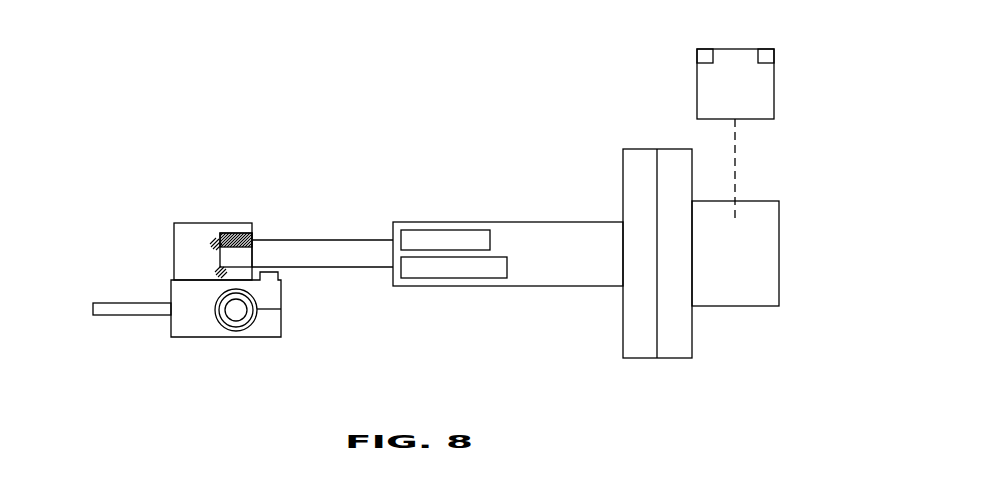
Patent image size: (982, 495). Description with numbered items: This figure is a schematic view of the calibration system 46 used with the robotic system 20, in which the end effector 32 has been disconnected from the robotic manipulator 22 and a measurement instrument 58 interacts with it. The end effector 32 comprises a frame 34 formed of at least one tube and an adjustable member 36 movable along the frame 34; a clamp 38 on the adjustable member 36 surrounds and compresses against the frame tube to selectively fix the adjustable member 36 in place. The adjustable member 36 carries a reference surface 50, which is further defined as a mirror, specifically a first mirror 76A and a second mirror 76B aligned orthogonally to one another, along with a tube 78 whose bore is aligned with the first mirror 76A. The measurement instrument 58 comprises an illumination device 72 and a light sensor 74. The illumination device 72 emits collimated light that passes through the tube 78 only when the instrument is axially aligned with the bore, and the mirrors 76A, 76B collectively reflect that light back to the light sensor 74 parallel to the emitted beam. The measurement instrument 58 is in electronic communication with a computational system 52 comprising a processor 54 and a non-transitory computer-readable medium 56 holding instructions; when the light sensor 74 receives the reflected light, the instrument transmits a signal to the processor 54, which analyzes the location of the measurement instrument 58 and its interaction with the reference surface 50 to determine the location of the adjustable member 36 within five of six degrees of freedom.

The robotic system 20 is at (806, 78).
The robotic manipulator 22 is at (738, 298).
The end effector 32 is at (113, 230).
The frame 34 is at (234, 316).
The adjustable member 36 is at (128, 307).
The clamp 38 is at (166, 326).
The calibration system 46 is at (426, 168).
The reference surface 50 is at (212, 240).
The computational system 52 is at (725, 93).
The processor 54 is at (703, 53).
The non-transitory computer-readable medium 56 is at (768, 53).
The measurement instrument 58 is at (638, 156).
The illumination device 72 is at (438, 230).
The light sensor 74 is at (453, 273).
The first mirror 76A is at (223, 232).
The second mirror 76B is at (219, 276).
The tube 78 is at (238, 233).